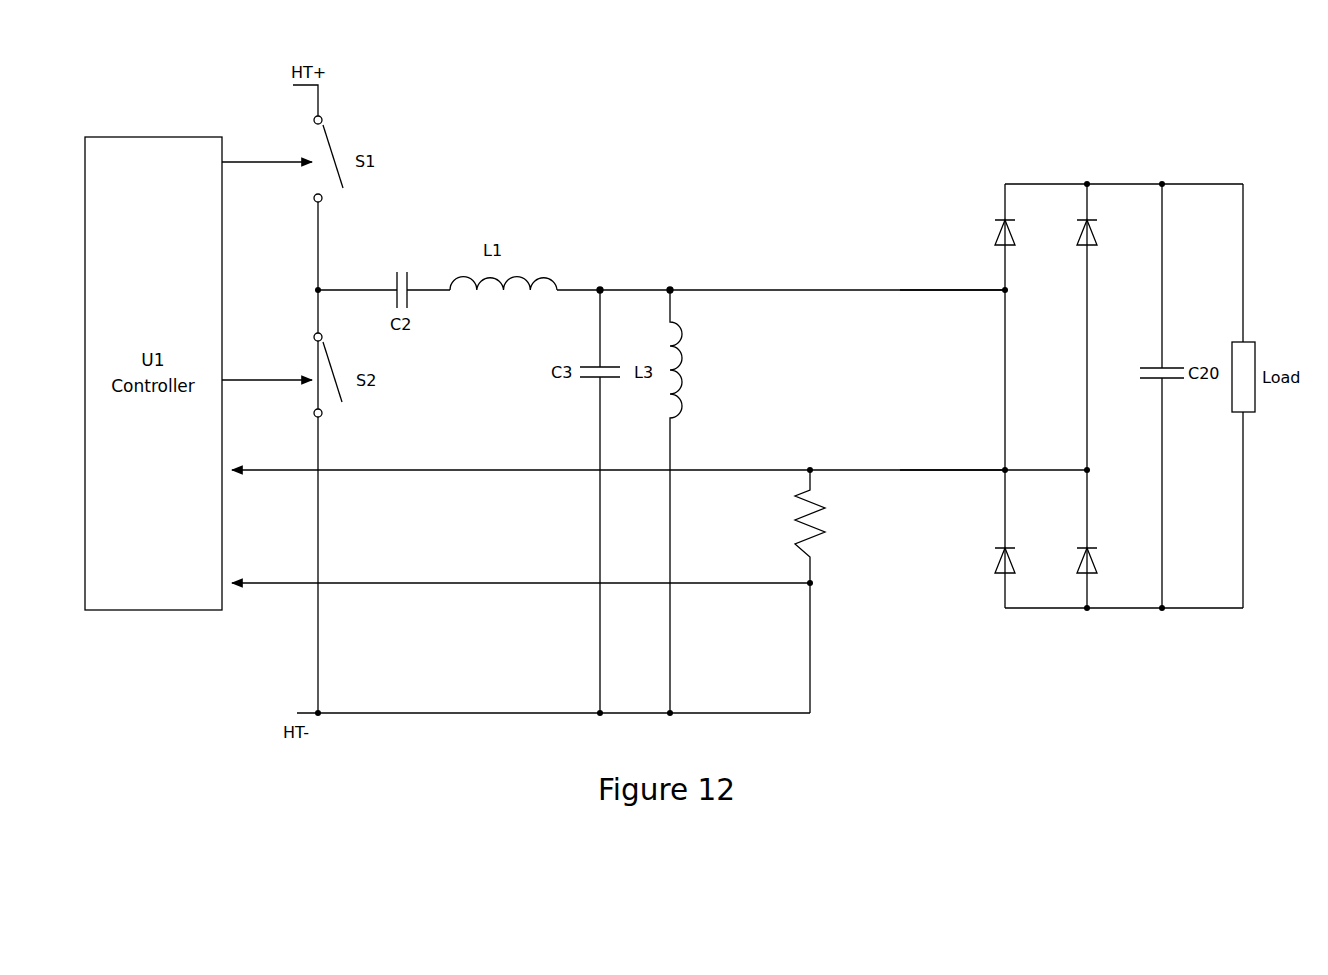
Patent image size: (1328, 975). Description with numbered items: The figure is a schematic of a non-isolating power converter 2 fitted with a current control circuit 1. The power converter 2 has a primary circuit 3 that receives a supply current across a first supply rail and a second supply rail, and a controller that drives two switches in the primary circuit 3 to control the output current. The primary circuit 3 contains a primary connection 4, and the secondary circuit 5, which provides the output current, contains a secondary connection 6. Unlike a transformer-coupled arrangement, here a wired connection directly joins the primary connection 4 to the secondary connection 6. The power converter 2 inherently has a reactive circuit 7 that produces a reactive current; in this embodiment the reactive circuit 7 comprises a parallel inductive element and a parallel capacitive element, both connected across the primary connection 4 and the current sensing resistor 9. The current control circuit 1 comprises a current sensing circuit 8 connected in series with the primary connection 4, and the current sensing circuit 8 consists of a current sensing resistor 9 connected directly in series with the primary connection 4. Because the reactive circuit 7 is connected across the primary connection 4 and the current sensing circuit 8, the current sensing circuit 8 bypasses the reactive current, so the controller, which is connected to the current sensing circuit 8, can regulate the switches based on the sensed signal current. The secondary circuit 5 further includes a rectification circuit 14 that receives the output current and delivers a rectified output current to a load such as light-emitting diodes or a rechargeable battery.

The current control circuit 1 is at (822, 562).
The power converter 2 is at (757, 97).
The primary circuit 3 is at (797, 238).
The primary connection 4 is at (928, 288).
The secondary circuit 5 is at (955, 185).
The secondary connection 6 is at (945, 470).
The reactive circuit 7 is at (617, 270).
The current sensing circuit 8 is at (838, 490).
The current sensing resistor 9 is at (850, 522).
The rectification circuit 14 is at (1125, 635).